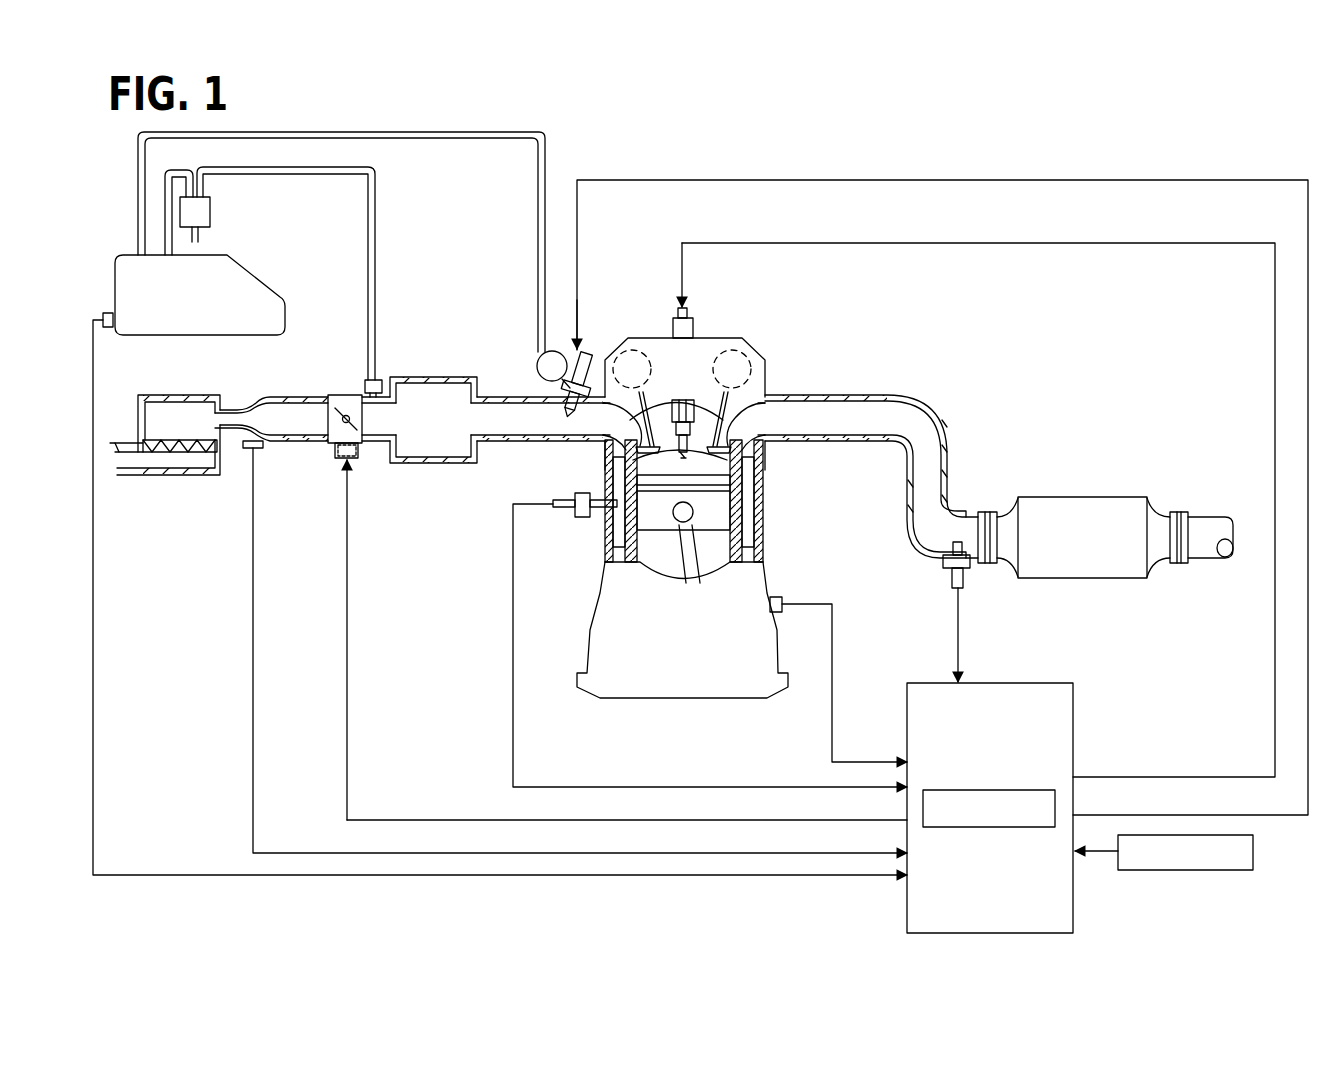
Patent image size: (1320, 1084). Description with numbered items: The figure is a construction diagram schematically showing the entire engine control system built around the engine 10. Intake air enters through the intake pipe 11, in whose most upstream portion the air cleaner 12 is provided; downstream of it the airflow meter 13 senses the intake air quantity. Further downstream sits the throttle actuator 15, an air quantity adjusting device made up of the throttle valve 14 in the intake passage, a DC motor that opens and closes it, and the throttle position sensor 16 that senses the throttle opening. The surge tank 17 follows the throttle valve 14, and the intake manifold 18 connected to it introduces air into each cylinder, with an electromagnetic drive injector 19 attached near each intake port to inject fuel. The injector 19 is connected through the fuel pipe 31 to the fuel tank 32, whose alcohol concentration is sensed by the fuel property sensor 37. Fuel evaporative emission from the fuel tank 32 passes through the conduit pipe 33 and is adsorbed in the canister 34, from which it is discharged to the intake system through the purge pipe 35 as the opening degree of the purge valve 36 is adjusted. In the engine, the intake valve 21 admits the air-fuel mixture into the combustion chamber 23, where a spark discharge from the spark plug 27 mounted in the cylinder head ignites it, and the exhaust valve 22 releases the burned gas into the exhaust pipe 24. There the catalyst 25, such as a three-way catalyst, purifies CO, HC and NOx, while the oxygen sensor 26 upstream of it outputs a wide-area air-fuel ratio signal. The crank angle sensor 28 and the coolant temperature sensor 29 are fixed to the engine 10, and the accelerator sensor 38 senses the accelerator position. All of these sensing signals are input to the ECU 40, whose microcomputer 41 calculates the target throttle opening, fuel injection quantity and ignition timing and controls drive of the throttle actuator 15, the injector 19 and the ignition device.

The engine 10 is at (813, 340).
The intake pipe 11 is at (284, 397).
The air cleaner 12 is at (187, 455).
The airflow meter 13 is at (244, 450).
The throttle valve 14 is at (336, 412).
The throttle actuator 15 is at (339, 460).
The throttle position sensor 16 is at (355, 465).
The surge tank 17 is at (430, 377).
The intake manifold 18 is at (507, 443).
The injector 19 is at (556, 384).
The intake valve 21 is at (623, 440).
The exhaust valve 22 is at (763, 433).
The combustion chamber 23 is at (710, 465).
The exhaust pipe 24 is at (874, 395).
The catalyst 25 is at (1119, 496).
The oxygen sensor 26 is at (965, 580).
The spark plug 27 is at (690, 398).
The crank angle sensor 28 is at (784, 601).
The coolant temperature sensor 29 is at (578, 518).
The fuel pipe 31 is at (419, 140).
The fuel tank 32 is at (263, 284).
The conduit pipe 33 is at (164, 185).
The canister 34 is at (210, 211).
The purge pipe 35 is at (304, 175).
The purge valve 36 is at (366, 383).
The fuel property sensor 37 is at (108, 327).
The accelerator sensor 38 is at (1253, 851).
The ECU 40 is at (1017, 683).
The microcomputer 41 is at (1032, 790).